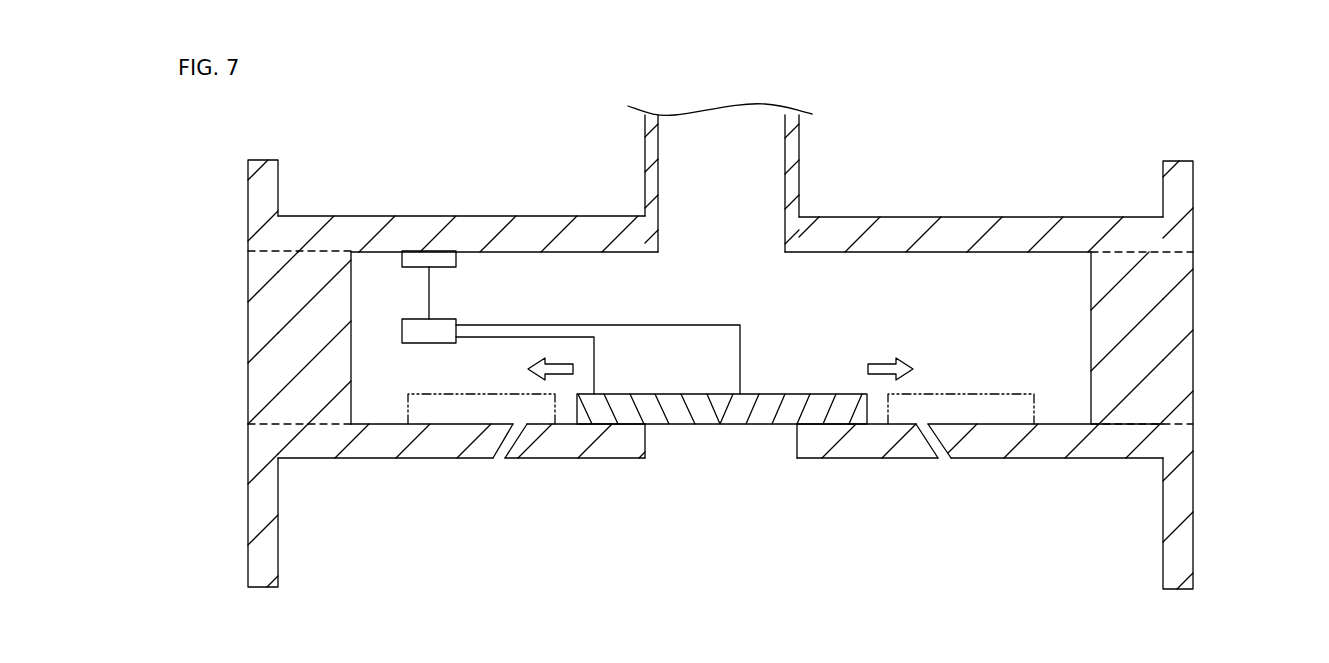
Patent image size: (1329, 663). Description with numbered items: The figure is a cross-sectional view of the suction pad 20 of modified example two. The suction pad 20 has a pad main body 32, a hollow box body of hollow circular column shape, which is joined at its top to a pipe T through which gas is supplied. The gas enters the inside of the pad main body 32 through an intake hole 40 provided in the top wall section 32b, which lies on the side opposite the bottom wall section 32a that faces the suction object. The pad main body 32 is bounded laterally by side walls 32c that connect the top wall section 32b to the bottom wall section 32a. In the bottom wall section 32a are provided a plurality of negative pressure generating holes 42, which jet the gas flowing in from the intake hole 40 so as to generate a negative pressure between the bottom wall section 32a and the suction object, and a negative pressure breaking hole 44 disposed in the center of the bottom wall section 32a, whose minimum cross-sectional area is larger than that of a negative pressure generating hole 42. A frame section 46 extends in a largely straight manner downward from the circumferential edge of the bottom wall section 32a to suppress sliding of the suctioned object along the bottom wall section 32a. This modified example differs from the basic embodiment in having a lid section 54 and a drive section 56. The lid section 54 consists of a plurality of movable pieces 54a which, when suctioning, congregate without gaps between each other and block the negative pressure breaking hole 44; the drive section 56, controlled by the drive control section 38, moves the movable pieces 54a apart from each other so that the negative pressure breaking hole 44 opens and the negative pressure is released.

The suction pad 20 is at (475, 104).
The pad main body 32 is at (910, 200).
The bottom wall section 32a is at (395, 440).
The top wall section 32b is at (427, 221).
The side wall of duct 32c is at (267, 338).
The drive control section 38 is at (443, 262).
The intake hole 40 is at (760, 265).
The negative pressure generating hole 42 is at (495, 462).
The negative pressure breaking hole 44 is at (720, 444).
The frame section 46 is at (248, 520).
The lid section 54 is at (721, 364).
The movable piece 54a is at (644, 405).
The drive section 56 is at (432, 347).
The pipe T is at (791, 145).